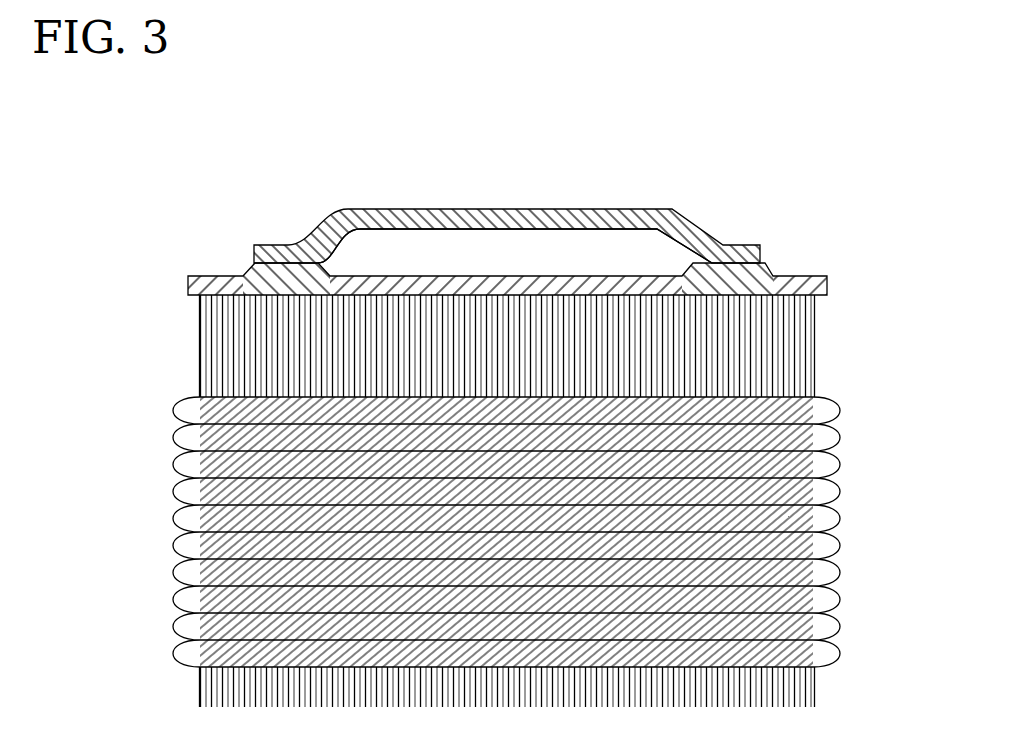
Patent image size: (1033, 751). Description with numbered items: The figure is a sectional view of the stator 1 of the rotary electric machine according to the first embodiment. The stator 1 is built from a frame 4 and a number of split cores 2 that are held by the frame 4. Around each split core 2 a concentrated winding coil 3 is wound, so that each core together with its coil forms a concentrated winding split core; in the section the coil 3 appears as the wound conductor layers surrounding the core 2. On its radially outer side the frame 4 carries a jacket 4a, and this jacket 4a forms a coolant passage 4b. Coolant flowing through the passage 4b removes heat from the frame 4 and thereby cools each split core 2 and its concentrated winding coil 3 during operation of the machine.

The stator 1 is at (442, 186).
The split core 2 is at (218, 353).
The concentrated winding coil 3 is at (790, 540).
The frame 4 is at (802, 278).
The jacket 4a is at (520, 212).
The coolant passage 4b is at (617, 245).